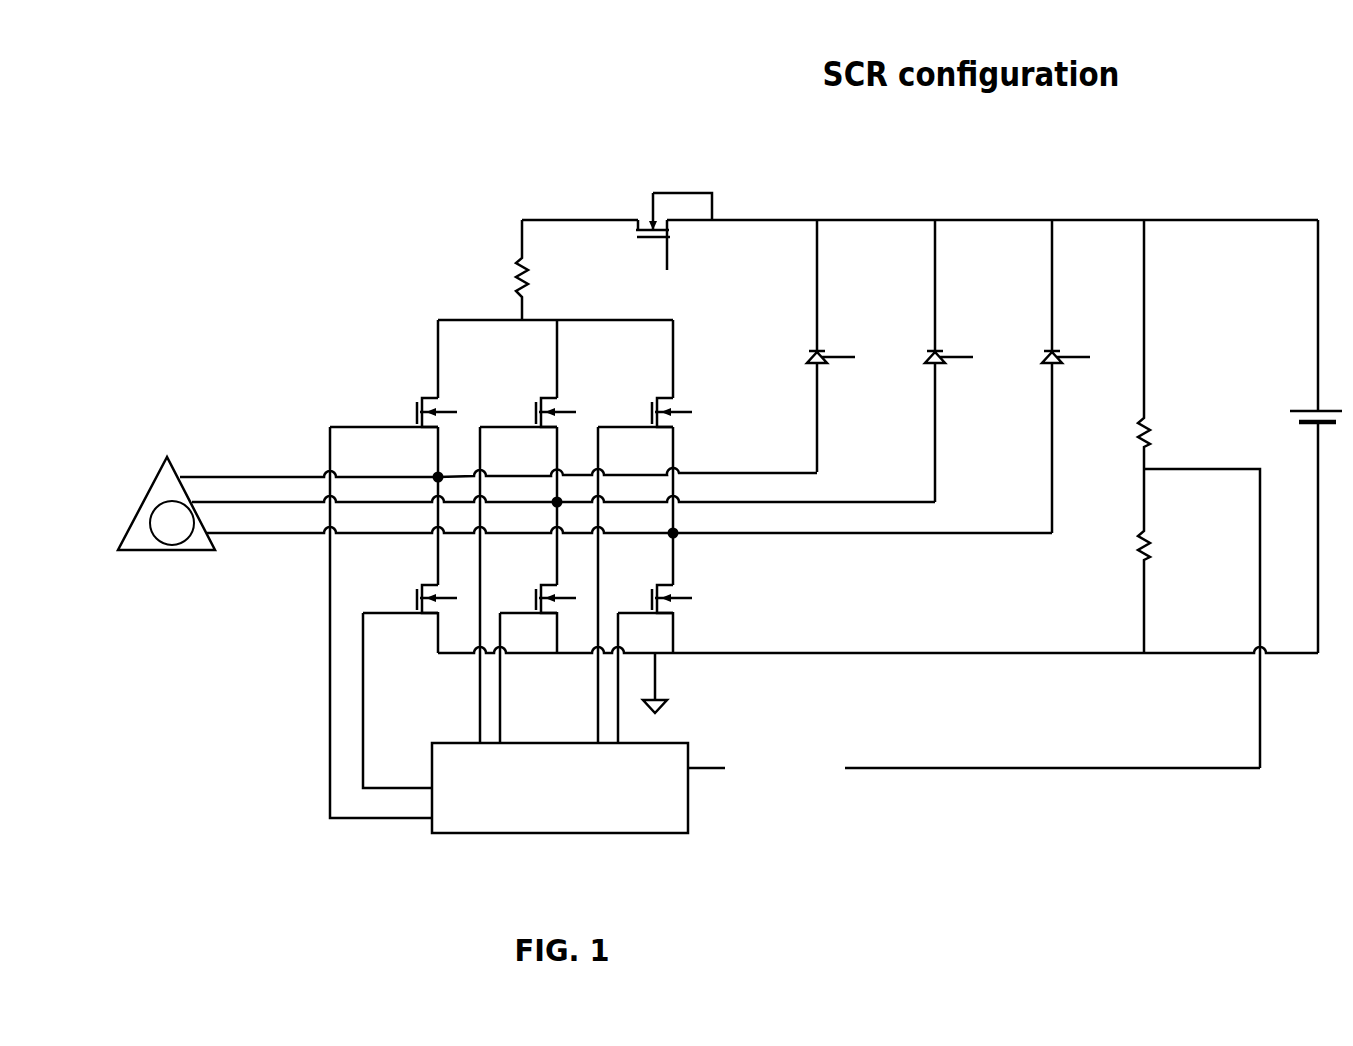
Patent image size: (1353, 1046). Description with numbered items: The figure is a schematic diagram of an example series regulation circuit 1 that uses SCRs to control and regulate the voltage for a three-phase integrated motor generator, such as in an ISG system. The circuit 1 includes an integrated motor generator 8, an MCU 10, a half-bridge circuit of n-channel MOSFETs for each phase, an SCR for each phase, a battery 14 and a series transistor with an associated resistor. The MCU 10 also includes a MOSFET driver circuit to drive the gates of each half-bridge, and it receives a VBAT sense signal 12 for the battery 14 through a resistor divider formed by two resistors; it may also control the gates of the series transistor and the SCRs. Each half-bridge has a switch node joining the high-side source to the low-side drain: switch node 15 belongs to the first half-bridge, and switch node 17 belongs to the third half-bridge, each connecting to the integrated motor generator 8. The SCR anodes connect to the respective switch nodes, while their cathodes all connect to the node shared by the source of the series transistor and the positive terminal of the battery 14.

The circuit 1 is at (250, 86).
The integrated motor generator 8 is at (181, 560).
The MCU 10 is at (560, 788).
The VBAT sense signal 12 is at (974, 762).
The battery 14 is at (1277, 436).
The switch node 15 is at (431, 468).
The switch node 17 is at (687, 541).